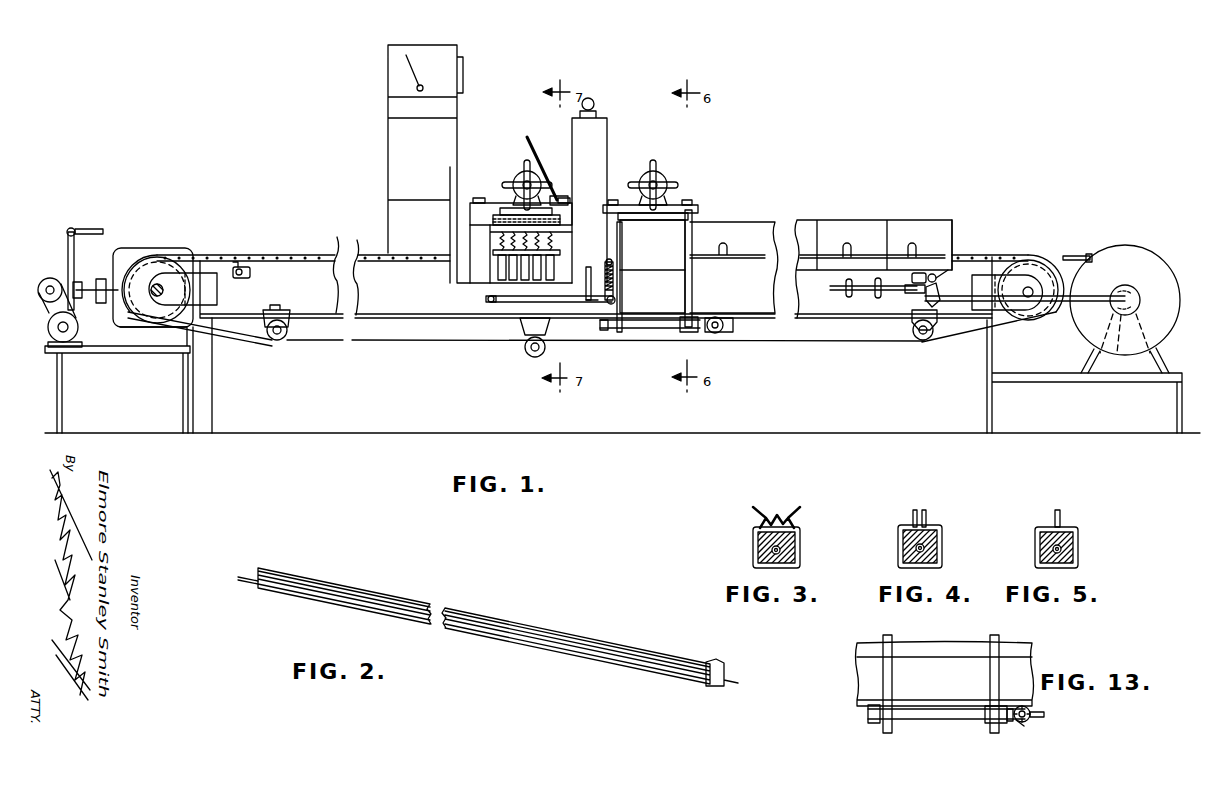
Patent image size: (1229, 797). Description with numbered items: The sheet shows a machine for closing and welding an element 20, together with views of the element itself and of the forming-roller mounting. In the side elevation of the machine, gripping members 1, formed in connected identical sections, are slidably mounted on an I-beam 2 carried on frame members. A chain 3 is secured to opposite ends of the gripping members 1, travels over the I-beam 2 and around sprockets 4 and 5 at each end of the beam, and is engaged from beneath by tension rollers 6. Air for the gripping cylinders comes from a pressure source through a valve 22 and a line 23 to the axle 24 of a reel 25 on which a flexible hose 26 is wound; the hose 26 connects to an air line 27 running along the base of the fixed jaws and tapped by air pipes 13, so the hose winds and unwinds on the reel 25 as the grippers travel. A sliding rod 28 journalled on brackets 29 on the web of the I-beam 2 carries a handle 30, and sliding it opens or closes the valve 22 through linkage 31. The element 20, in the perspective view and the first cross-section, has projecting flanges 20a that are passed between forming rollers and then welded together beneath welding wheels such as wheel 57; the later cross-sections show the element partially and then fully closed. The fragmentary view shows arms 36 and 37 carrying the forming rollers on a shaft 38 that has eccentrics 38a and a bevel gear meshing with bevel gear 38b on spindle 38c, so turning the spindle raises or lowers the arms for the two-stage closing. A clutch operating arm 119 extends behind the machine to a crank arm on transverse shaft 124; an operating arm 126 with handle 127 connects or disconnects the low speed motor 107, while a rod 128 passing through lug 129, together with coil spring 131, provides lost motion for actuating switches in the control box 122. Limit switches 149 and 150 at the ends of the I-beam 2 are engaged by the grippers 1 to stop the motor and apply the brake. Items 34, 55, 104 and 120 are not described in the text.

In FIG. 1, the gripping members 1 is at (750, 230).
In FIG. 1, the I-beam 2 is at (332, 268).
In FIG. 13, the I-beam 2 is at (857, 672).
In FIG. 1, the chain 3 is at (963, 256).
In FIG. 1, the sprocket 4 is at (1032, 265).
In FIG. 1, the sprocket 5 is at (151, 259).
In FIG. 1, the tension rollers 6 is at (289, 327).
In FIG. 1, the air pipes 13 is at (912, 247).
In FIG. 2, the element 20 is at (425, 598).
In FIG. 3, the element 20 is at (752, 552).
In FIG. 4, the element 20 is at (898, 550).
In FIG. 5, the element 20 is at (1047, 553).
In FIG. 2, the projecting flanges 20a is at (710, 662).
In FIG. 3, the projecting flanges 20a is at (762, 511).
In FIG. 4, the projecting flanges 20a is at (918, 510).
In FIG. 5, the projecting flanges 20a is at (1057, 510).
In FIG. 1, the valve 22 is at (937, 292).
In FIG. 1, the line 23 is at (1072, 315).
In FIG. 1, the axle 24 is at (1133, 297).
In FIG. 1, the reel 25 is at (1147, 256).
In FIG. 1, the flexible hose 26 is at (1080, 254).
In FIG. 1, the air line 27 is at (862, 253).
In FIG. 1, the sliding rod 28 is at (879, 291).
In FIG. 1, the brackets 29 is at (876, 288).
In FIG. 1, the handle 30 is at (847, 295).
In FIG. 1, the linkage 31 is at (923, 294).
In FIG. 1, the press head body 34 is at (675, 222).
In FIG. 1, the arm 36 is at (692, 288).
In FIG. 13, the arm 36 is at (888, 727).
In FIG. 13, the arm 37 is at (870, 727).
In FIG. 1, the shaft 38 is at (653, 329).
In FIG. 13, the shaft 38 is at (932, 717).
In FIG. 1, the eccentrics 38a is at (733, 333).
In FIG. 13, the eccentrics 38a is at (1045, 715).
In FIG. 13, the bevel gear 38b is at (1030, 711).
In FIG. 13, the spindle 38c is at (1043, 724).
In FIG. 1, the press frame 55 is at (693, 208).
In FIG. 1, the welding wheel 57 is at (492, 212).
In FIG. 1, the drive shaft 104 is at (98, 288).
In FIG. 1, the low speed motor 107 is at (79, 333).
In FIG. 1, the clutch operating arm 119 is at (96, 228).
In FIG. 1, the control lever 120 is at (71, 227).
In FIG. 1, the control box 122 is at (600, 323).
In FIG. 1, the transverse rotatable shaft 124 is at (491, 304).
In FIG. 1, the operating arm 126 is at (586, 284).
In FIG. 1, the handle 127 is at (589, 266).
In FIG. 1, the rod 128 is at (614, 290).
In FIG. 1, the lug 129 is at (510, 297).
In FIG. 1, the coil spring 131 is at (609, 304).
In FIG. 1, the limit switch 149 is at (242, 278).
In FIG. 1, the limit switch 150 is at (912, 277).